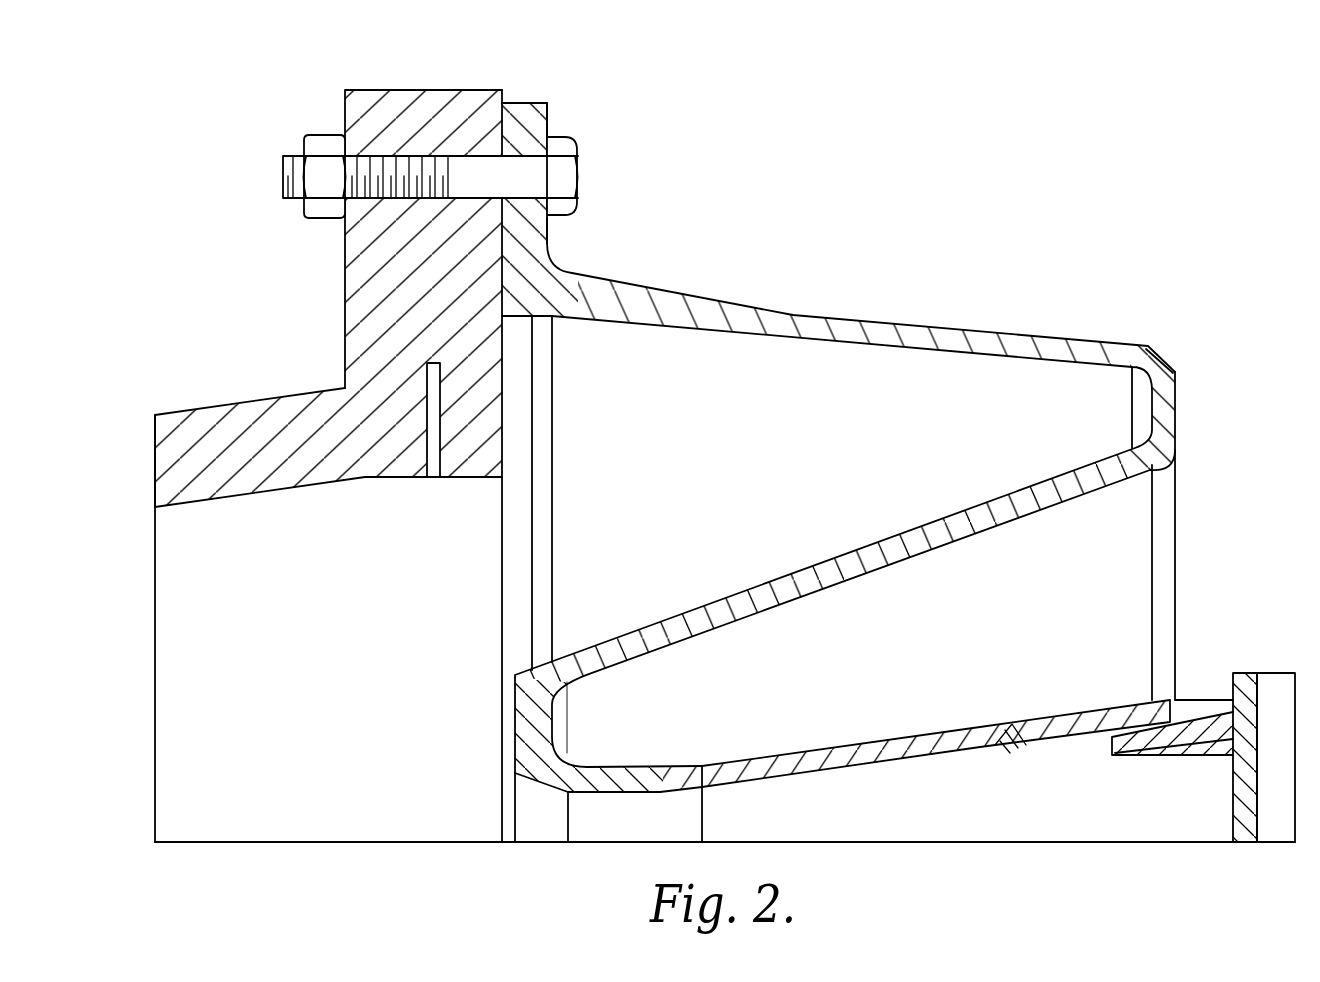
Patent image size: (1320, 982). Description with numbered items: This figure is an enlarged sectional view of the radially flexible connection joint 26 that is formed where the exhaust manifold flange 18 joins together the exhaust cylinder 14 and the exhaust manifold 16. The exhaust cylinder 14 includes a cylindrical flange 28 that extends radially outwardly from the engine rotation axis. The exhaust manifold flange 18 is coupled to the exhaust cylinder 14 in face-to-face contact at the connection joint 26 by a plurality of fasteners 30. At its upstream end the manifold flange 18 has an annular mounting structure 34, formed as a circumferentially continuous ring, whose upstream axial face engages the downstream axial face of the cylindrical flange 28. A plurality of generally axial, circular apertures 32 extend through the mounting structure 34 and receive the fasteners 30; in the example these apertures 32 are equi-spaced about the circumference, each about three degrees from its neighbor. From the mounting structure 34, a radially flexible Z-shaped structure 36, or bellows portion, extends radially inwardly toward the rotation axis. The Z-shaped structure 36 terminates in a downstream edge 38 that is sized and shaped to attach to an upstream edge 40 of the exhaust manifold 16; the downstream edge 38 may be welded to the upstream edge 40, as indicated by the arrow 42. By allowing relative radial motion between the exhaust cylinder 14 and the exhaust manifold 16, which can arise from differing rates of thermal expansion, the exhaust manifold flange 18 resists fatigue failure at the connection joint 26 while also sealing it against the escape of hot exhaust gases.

The exhaust cylinder 14 is at (270, 385).
The exhaust manifold 16 is at (1145, 690).
The exhaust manifold flange 18 is at (955, 316).
The radially flexible connection joint 26 is at (666, 68).
The cylindrical flange 28 is at (398, 92).
The fasteners 30 is at (590, 174).
The apertures 32 is at (524, 156).
The annular mounting structure 34 is at (523, 102).
The Z-shaped structure 36 is at (1185, 398).
The downstream edge 38 is at (1003, 735).
The upstream edge 40 is at (1010, 730).
The arrow 42 is at (1015, 768).